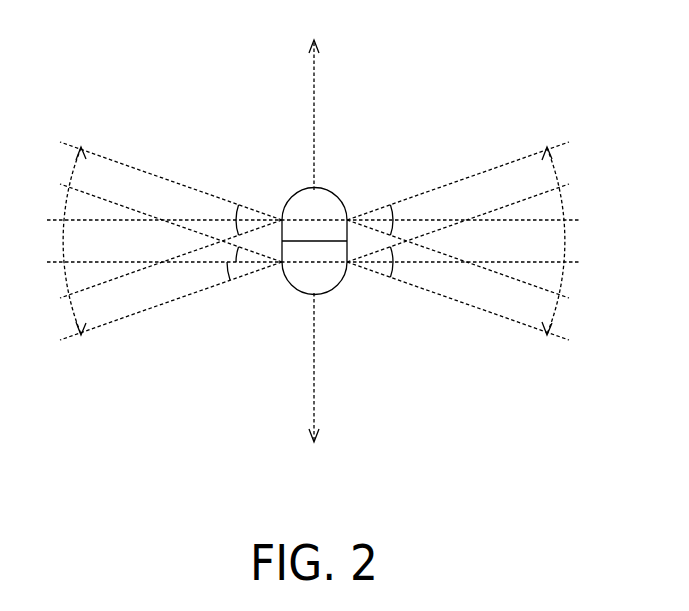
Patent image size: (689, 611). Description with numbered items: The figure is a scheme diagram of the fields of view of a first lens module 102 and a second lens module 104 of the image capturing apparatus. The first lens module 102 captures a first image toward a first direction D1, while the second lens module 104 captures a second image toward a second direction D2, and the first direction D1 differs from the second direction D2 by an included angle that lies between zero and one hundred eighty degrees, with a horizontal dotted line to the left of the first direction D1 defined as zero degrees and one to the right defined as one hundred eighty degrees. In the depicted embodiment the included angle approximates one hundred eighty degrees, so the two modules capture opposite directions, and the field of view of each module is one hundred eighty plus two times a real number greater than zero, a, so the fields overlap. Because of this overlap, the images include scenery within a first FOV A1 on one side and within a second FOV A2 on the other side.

The first lens module 102 is at (332, 197).
The second lens module 104 is at (341, 288).
The first direction D1 is at (312, 99).
The second direction D2 is at (312, 383).
The first FOV A1 is at (58, 241).
The second FOV A2 is at (570, 241).
The real number greater than 0 a is at (314, 241).